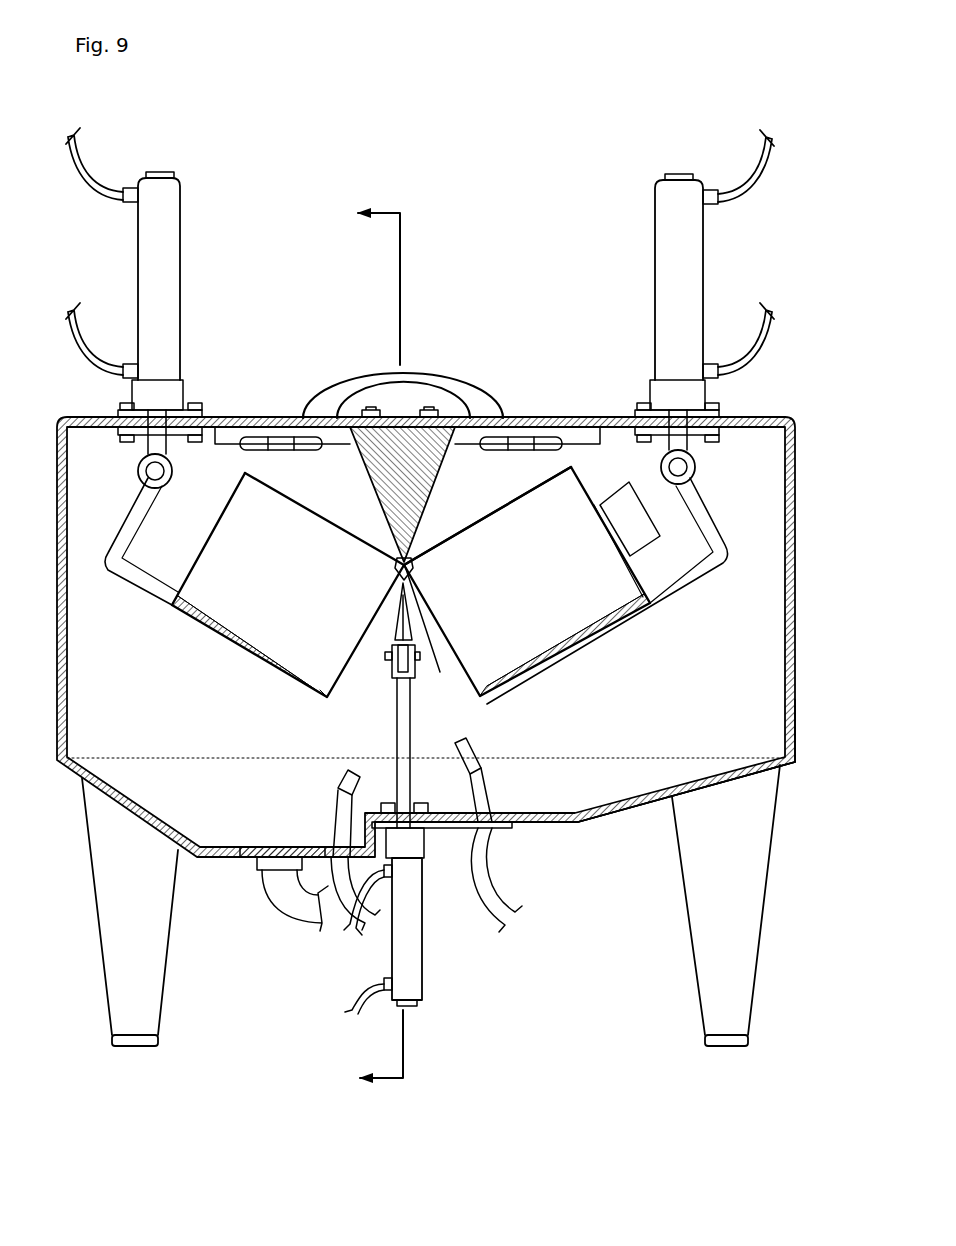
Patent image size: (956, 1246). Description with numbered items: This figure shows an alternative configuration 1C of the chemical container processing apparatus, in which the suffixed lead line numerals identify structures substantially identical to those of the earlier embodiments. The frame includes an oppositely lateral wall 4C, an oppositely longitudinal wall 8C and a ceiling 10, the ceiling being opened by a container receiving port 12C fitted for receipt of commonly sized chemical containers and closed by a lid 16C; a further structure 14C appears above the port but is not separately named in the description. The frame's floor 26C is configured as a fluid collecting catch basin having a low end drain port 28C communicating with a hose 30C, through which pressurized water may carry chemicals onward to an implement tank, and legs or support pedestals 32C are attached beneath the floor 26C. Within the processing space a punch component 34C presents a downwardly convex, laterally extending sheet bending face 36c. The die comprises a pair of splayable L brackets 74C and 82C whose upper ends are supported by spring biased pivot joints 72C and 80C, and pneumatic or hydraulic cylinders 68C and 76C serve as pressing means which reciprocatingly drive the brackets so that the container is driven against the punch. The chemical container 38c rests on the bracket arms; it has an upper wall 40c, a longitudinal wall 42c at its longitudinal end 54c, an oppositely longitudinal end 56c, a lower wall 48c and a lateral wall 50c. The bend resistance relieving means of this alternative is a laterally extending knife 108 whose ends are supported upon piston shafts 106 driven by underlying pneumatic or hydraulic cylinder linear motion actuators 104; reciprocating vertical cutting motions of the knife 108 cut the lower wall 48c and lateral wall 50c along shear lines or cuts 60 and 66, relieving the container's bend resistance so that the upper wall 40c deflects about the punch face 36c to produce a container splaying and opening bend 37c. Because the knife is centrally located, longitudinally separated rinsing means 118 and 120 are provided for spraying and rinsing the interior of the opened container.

The alternative configuration 1C is at (460, 288).
The oppositely lateral wall 4C is at (748, 690).
The oppositely longitudinal wall 8C is at (797, 585).
The ceiling 10 is at (362, 646).
The container receiving port 12C is at (278, 443).
The dome 14C is at (278, 417).
The lid 16C is at (539, 417).
The floor 26C is at (582, 822).
The low end drain port 28C is at (276, 855).
The hose 30C is at (282, 892).
The support pedestals 32C is at (735, 940).
The punch component 34C is at (385, 478).
The sheet bending face 36c is at (406, 530).
The container splaying and opening bend 37c is at (434, 632).
The chemical container 38c is at (506, 486).
The upper wall 40c is at (363, 541).
The longitudinal wall 42c is at (216, 513).
The lower wall 48c is at (315, 700).
The lateral wall 50c is at (553, 645).
The longitudinal end 54c is at (367, 632).
The oppositely longitudinal end 56c is at (597, 578).
The shear line 60 is at (223, 595).
The shear line 66 is at (527, 597).
The hydraulic or pneumatic cylinder 68C is at (167, 277).
The pivot joint 72C is at (148, 470).
The L bracket 74C is at (273, 673).
The pneumatic or hydraulic cylinder 76C is at (693, 290).
The pivot joint 80C is at (697, 468).
The L bracket 82C is at (672, 595).
The linear motion actuator 104 is at (407, 948).
The piston shaft 106 is at (403, 722).
The knife 108 is at (396, 622).
The rinsing means 118 is at (352, 778).
The rinsing means 120 is at (462, 752).